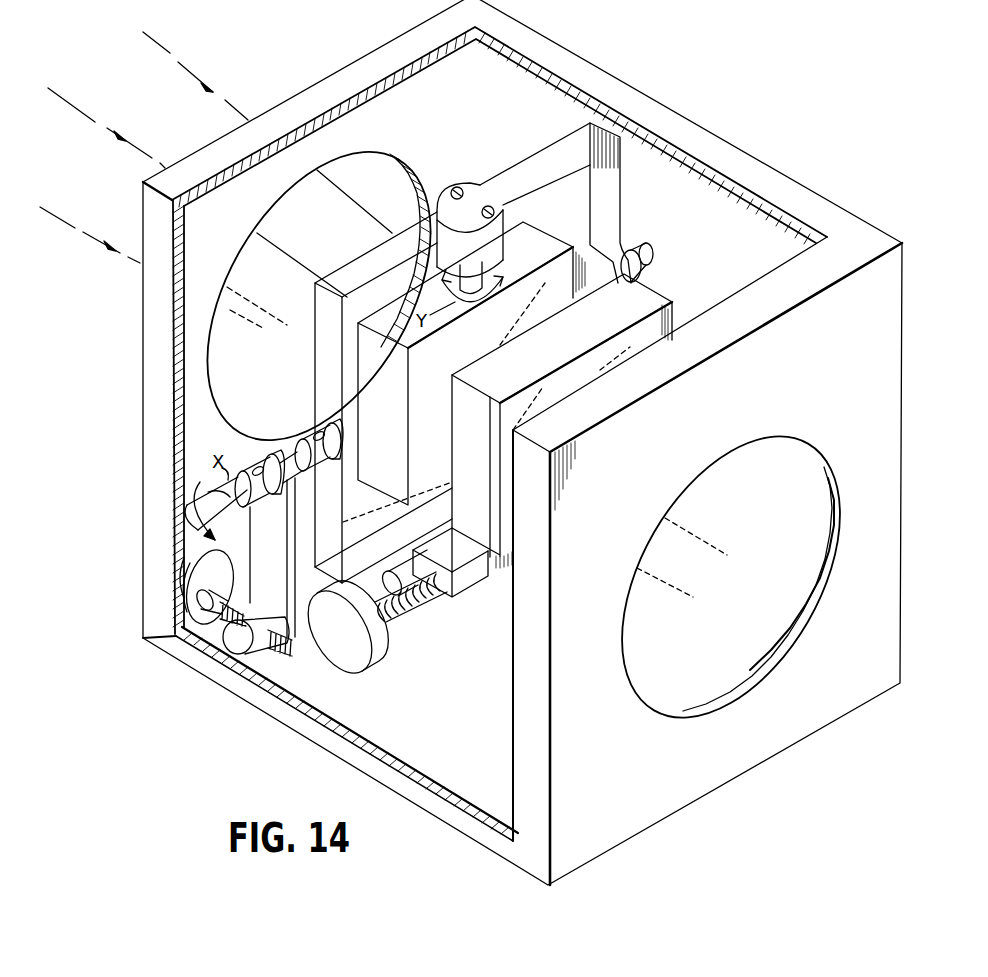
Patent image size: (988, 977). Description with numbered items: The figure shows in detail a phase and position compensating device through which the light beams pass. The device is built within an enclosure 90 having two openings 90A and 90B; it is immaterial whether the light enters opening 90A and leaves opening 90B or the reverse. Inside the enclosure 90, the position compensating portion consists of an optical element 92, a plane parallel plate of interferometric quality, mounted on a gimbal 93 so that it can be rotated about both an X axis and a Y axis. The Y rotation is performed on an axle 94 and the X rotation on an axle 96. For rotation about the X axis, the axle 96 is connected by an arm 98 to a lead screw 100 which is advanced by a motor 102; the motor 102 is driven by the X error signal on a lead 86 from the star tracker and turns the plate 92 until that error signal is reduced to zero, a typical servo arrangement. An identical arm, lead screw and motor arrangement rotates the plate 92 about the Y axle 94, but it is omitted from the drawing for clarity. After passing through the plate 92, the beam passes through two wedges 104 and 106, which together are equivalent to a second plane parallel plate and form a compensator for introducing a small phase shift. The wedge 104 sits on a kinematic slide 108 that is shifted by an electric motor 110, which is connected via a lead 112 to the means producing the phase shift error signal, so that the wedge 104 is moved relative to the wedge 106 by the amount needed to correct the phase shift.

The lead 86 is at (190, 565).
The enclosure 90 is at (737, 148).
The opening 90A is at (232, 422).
The opening 90B is at (625, 662).
The optical element 92 is at (528, 225).
The gimbal 93 is at (518, 162).
The axle 94 is at (504, 237).
The axle 96 is at (190, 514).
The arm 98 is at (278, 573).
The lead screw 100 is at (292, 652).
The motor 102 is at (190, 600).
The wedge 104 is at (642, 276).
The wedge 106 is at (642, 310).
The kinematic slide 108 is at (468, 583).
The electric motor 110 is at (380, 650).
The lead 112 is at (372, 692).